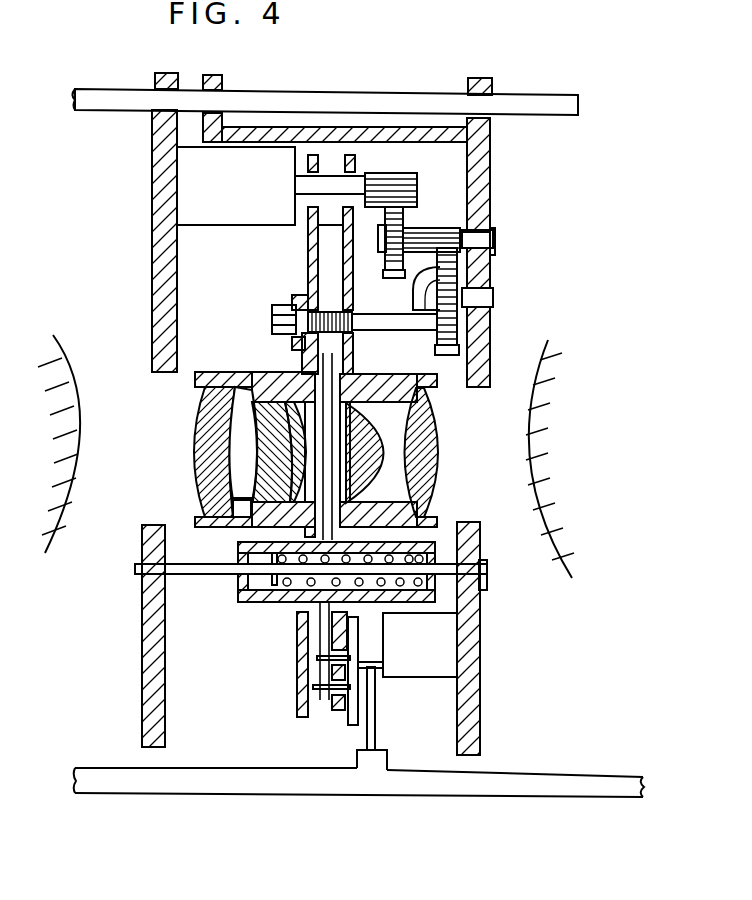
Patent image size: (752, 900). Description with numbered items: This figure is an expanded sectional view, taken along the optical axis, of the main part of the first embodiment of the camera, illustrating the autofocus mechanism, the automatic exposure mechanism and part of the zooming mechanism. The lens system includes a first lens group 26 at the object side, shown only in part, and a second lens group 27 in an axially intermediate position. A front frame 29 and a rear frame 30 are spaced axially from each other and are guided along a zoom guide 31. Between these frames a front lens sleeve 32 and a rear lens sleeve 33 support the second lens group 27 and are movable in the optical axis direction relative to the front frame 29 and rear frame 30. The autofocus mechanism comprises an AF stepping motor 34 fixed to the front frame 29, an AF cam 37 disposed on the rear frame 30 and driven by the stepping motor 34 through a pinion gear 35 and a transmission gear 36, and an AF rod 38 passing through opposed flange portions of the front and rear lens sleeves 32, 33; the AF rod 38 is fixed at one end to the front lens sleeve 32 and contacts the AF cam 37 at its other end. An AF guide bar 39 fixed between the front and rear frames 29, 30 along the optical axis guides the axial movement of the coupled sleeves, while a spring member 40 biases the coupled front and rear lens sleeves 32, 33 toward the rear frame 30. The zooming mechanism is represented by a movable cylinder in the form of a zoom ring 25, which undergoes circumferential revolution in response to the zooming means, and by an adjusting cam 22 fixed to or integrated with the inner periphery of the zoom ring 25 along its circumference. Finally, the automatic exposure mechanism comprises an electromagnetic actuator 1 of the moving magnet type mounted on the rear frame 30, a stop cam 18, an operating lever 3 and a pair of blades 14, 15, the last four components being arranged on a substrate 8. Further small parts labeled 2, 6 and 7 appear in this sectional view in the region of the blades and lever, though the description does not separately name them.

The electromagnetic actuator 1 is at (440, 662).
The connecting member 2 is at (378, 665).
The operating lever 3 is at (358, 705).
The element block 6 is at (348, 650).
The bar 7 is at (328, 700).
The substrate 8 is at (331, 715).
The blade 14 is at (297, 643).
The blade 15 is at (297, 670).
The stop cam 18 is at (375, 731).
The adjusting cam 22 is at (375, 765).
The zoom ring 25 is at (313, 787).
The first lens group 26 is at (55, 557).
The second lens group 27 is at (453, 448).
The front frame 29 is at (157, 211).
The rear frame 30 is at (489, 177).
The zoom guide 31 is at (521, 97).
The front lens sleeve 32 is at (307, 262).
The rear lens sleeve 33 is at (350, 350).
The AF stepping motor 34 is at (192, 210).
The pinion gear 35 is at (392, 172).
The transmission gear 36 is at (433, 225).
The AF cam 37 is at (493, 270).
The AF rod 38 is at (601, 540).
The AF guide bar 39 is at (215, 575).
The spring member 40 is at (278, 606).